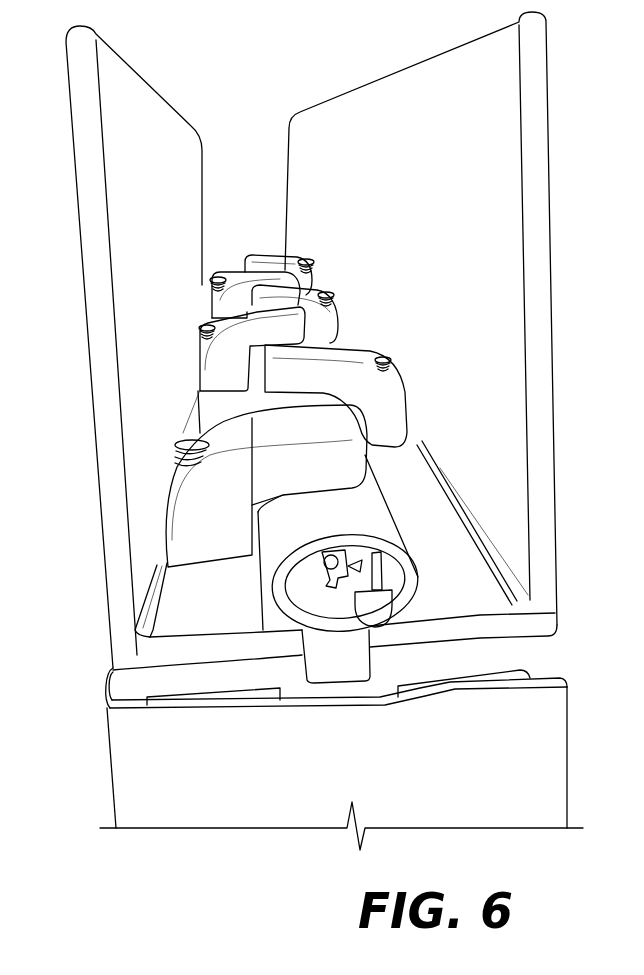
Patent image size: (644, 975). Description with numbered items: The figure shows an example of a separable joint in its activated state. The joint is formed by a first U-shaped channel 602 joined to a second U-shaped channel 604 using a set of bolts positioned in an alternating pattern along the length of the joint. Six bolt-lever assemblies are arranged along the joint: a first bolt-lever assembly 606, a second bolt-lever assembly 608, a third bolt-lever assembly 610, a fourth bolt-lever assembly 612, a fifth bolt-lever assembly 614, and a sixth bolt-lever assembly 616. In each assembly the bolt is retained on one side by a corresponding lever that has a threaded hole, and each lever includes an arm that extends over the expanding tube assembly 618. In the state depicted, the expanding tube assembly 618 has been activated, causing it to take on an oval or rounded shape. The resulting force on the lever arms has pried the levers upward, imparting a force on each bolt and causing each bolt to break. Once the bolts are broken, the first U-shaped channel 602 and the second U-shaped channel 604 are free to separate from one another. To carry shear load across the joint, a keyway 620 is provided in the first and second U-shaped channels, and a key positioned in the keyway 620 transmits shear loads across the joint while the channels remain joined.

The first U-shaped channel 602 is at (555, 485).
The second U-shaped channel 604 is at (558, 653).
The first bolt-lever assembly 606 is at (177, 507).
The second bolt-lever assembly 608 is at (407, 397).
The third bolt-lever assembly 610 is at (200, 357).
The fourth bolt-lever assembly 612 is at (338, 312).
The fifth bolt-lever assembly 614 is at (212, 283).
The sixth bolt-lever assembly 616 is at (312, 261).
The expanding tube assembly 618 is at (420, 578).
The keyway 620 is at (372, 652).